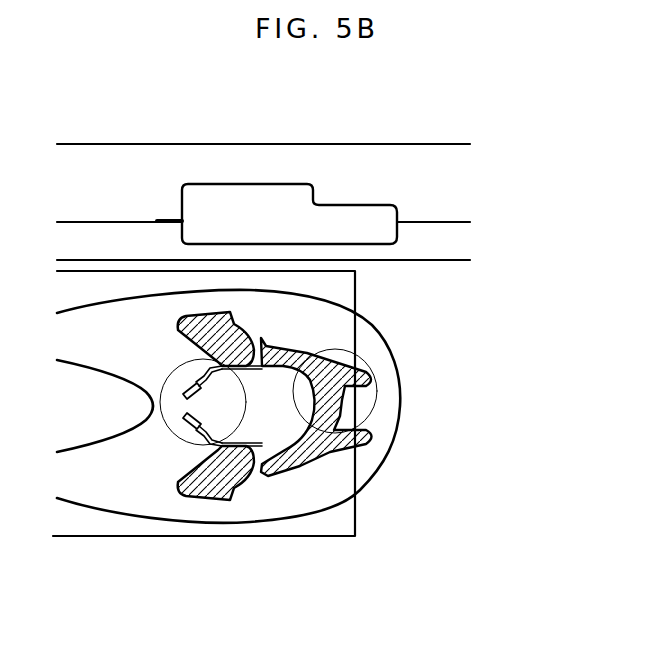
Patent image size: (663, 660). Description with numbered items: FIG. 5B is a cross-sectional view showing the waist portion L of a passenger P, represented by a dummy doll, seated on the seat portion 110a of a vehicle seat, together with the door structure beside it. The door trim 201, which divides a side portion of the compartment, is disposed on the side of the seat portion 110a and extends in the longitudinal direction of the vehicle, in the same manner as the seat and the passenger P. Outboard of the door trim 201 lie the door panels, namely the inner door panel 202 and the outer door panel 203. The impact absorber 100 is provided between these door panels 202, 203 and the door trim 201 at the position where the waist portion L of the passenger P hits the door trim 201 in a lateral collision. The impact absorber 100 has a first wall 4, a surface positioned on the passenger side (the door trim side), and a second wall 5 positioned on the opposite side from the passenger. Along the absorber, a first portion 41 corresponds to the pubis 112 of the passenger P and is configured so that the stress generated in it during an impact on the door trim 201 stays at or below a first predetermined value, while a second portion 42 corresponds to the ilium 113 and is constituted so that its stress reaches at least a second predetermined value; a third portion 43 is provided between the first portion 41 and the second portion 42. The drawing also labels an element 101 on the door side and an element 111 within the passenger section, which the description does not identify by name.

The first wall 4 is at (391, 254).
The second wall 5 is at (271, 172).
The first portion 41 is at (209, 251).
The second portion 42 is at (351, 252).
The third portion 43 is at (258, 278).
The impact absorber 100 is at (310, 183).
The protrusion 101 is at (172, 219).
The seat portion 110a is at (320, 271).
The body of attached member 111 is at (388, 428).
The pubis 112 is at (160, 440).
The ilium 113 is at (373, 395).
The door trim 201 is at (460, 262).
The inner door panel 202 is at (430, 222).
The outer door panel 203 is at (430, 144).
The waist portion L is at (393, 450).
The passenger P is at (385, 473).